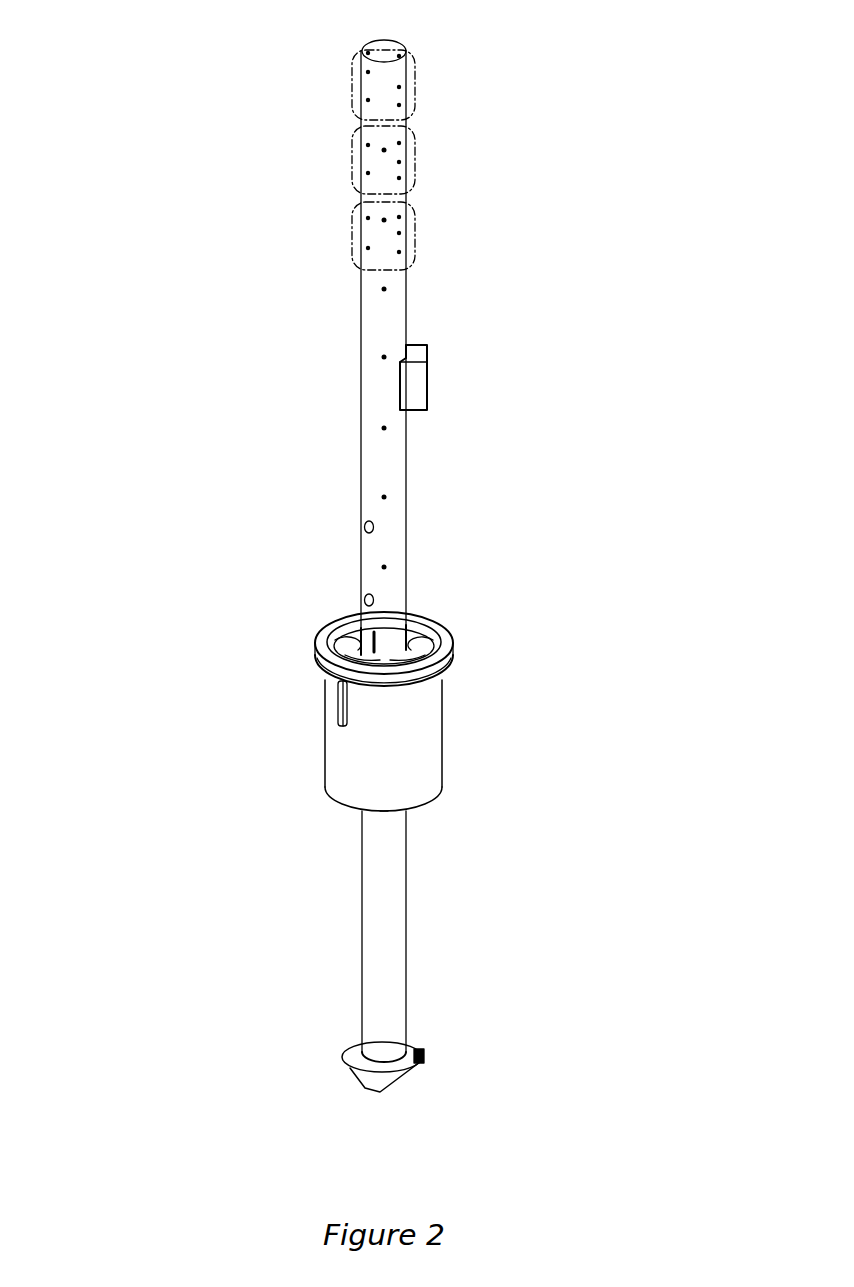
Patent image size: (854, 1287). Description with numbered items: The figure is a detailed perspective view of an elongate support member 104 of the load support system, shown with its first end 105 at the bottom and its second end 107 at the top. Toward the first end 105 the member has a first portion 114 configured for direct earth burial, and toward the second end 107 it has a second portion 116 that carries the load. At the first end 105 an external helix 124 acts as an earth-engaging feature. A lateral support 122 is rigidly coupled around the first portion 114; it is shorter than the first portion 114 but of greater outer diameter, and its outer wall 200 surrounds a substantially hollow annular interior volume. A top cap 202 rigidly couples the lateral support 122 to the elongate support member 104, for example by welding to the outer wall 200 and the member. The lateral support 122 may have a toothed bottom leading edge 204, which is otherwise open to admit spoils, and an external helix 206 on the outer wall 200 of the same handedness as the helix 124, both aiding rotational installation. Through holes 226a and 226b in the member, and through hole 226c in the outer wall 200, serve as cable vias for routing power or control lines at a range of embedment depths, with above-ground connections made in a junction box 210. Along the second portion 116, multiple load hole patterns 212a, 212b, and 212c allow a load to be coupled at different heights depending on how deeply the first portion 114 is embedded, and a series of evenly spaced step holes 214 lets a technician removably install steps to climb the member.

The elongate support member 104 is at (574, 505).
The first end 105 is at (375, 1090).
The second end 107 is at (370, 43).
The first portion 114 is at (352, 885).
The second portion 116 is at (344, 392).
The lateral support 122 is at (445, 758).
The external helix 124 is at (425, 1057).
The outer wall 200 is at (343, 757).
The top cap 202 is at (340, 645).
The bottom edge 204 is at (430, 802).
The external helix 206 is at (452, 650).
The junction box 210 is at (430, 392).
The load hole pattern 212a is at (414, 86).
The load hole pattern 212b is at (414, 155).
The load hole pattern 212c is at (414, 232).
The step holes 214 is at (382, 149).
The through hole 226a is at (364, 523).
The through hole 226b is at (364, 596).
The through hole 226c is at (337, 715).